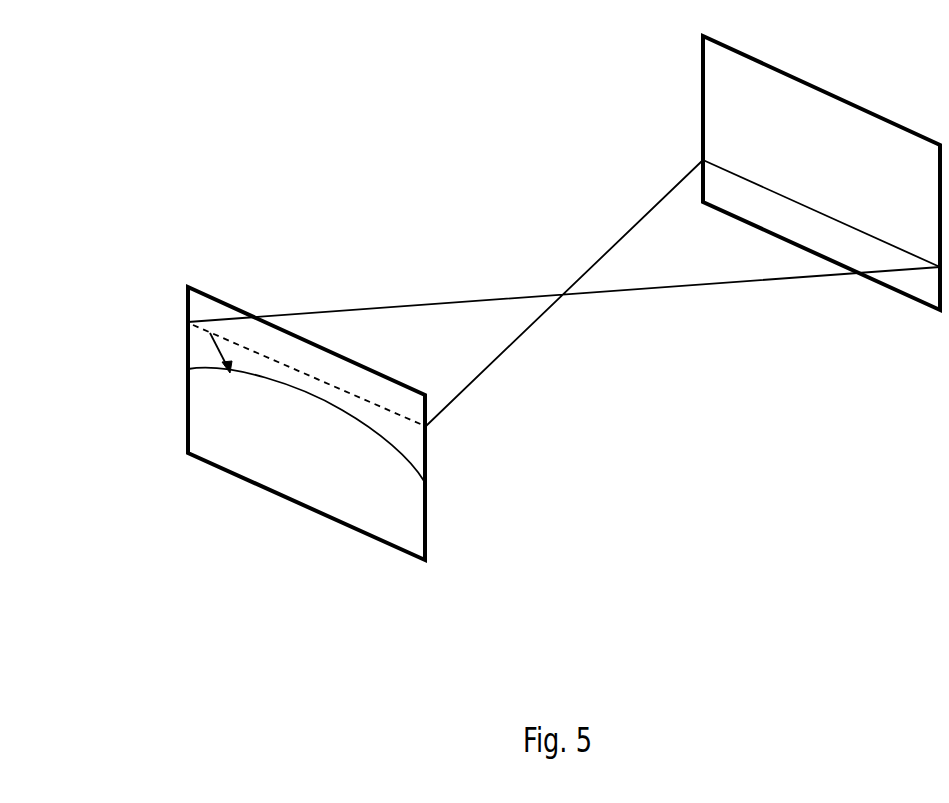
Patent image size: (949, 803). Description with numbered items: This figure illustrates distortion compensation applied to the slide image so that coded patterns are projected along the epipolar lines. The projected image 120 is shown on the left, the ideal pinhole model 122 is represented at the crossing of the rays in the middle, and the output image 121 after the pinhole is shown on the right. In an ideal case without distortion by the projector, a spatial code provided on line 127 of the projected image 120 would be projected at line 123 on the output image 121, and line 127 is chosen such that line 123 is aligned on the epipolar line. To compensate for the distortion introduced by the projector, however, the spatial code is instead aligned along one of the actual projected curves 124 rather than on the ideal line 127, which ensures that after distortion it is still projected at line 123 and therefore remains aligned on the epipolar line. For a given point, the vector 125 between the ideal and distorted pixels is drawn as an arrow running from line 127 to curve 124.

The projected image 120 is at (198, 290).
The output image 121 is at (870, 112).
The ideal pinhole model 122 is at (562, 295).
The line on the output image 123 is at (777, 190).
The actual projected curve 124 is at (342, 410).
The vector between ideal and distorted pixels 125 is at (215, 352).
The ideal line of the projected image 127 is at (415, 425).